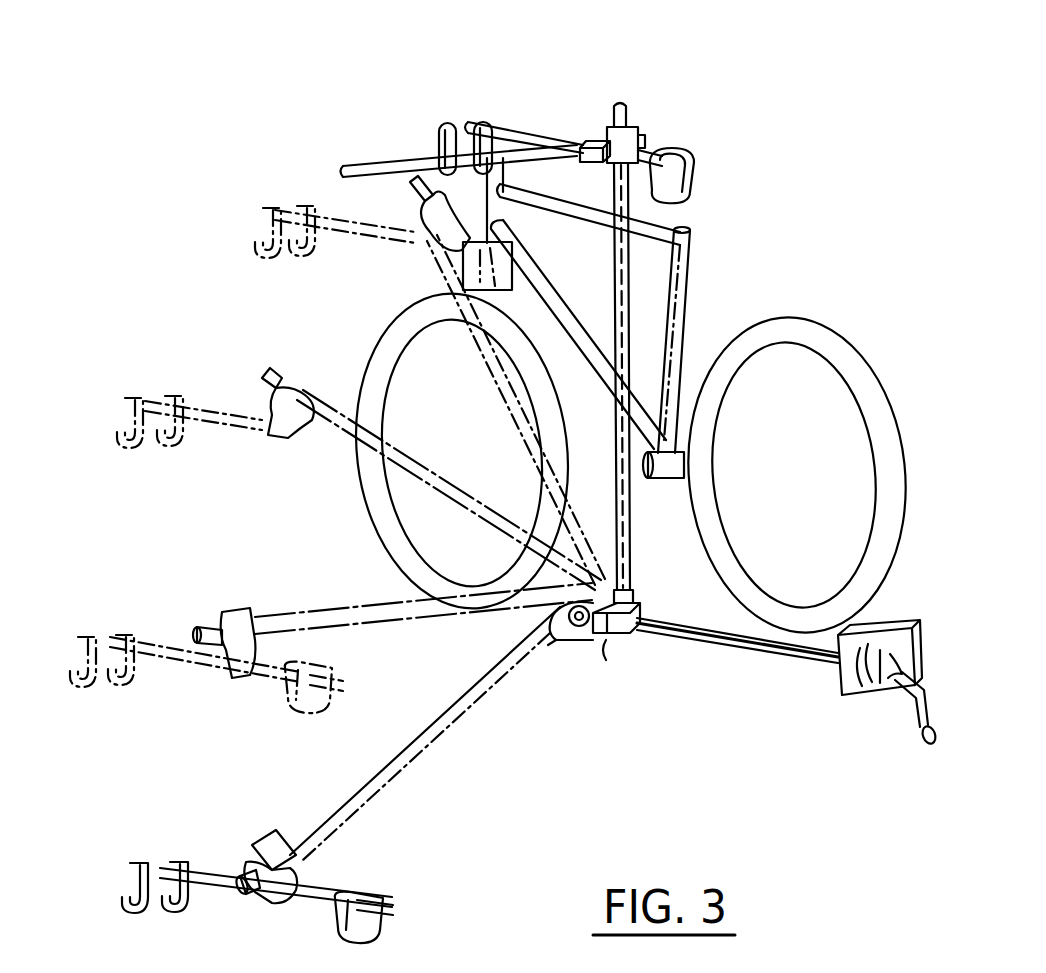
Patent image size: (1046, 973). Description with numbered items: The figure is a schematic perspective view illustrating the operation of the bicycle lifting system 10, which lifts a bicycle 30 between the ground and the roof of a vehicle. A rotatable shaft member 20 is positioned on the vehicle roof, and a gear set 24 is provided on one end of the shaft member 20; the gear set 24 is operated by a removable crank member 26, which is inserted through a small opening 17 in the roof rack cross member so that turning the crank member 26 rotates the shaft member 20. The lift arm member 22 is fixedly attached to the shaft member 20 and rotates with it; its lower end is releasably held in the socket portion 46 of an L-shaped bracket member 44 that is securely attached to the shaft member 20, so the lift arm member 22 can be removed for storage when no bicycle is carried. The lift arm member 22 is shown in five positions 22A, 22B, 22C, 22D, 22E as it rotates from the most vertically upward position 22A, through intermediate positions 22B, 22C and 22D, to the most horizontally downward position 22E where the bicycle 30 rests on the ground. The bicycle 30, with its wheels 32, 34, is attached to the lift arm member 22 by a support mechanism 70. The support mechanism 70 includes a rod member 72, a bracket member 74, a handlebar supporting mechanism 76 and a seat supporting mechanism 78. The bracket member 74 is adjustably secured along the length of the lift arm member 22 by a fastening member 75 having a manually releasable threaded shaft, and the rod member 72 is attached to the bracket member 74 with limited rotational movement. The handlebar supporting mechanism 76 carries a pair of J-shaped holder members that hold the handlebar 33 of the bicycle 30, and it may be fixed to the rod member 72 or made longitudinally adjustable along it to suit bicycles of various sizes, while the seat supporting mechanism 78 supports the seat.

The bicycle lifting system 10 is at (587, 752).
The small opening 17 is at (843, 692).
The rotatable shaft member 20 is at (740, 642).
The lift arm member 22 is at (614, 265).
The lift arm position 22A is at (640, 330).
The lift arm position 22B is at (513, 396).
The lift arm position 22C is at (427, 477).
The lift arm position 22D is at (342, 615).
The lift arm position 22E is at (452, 716).
The gear set 24 is at (859, 666).
The crank member 26 is at (917, 710).
The bicycle 30 is at (690, 265).
The wheel 32 is at (405, 313).
The handlebar 33 is at (372, 162).
The wheel 34 is at (835, 343).
The L-shaped bracket member 44 is at (612, 633).
The socket portion 46 is at (632, 600).
The support mechanism 70 is at (576, 131).
The rod member 72 is at (546, 140).
The bracket member 74 is at (612, 163).
The fastening member 75 is at (648, 140).
The handlebar supporting mechanism 76 is at (437, 150).
The seat supporting mechanism 78 is at (693, 182).